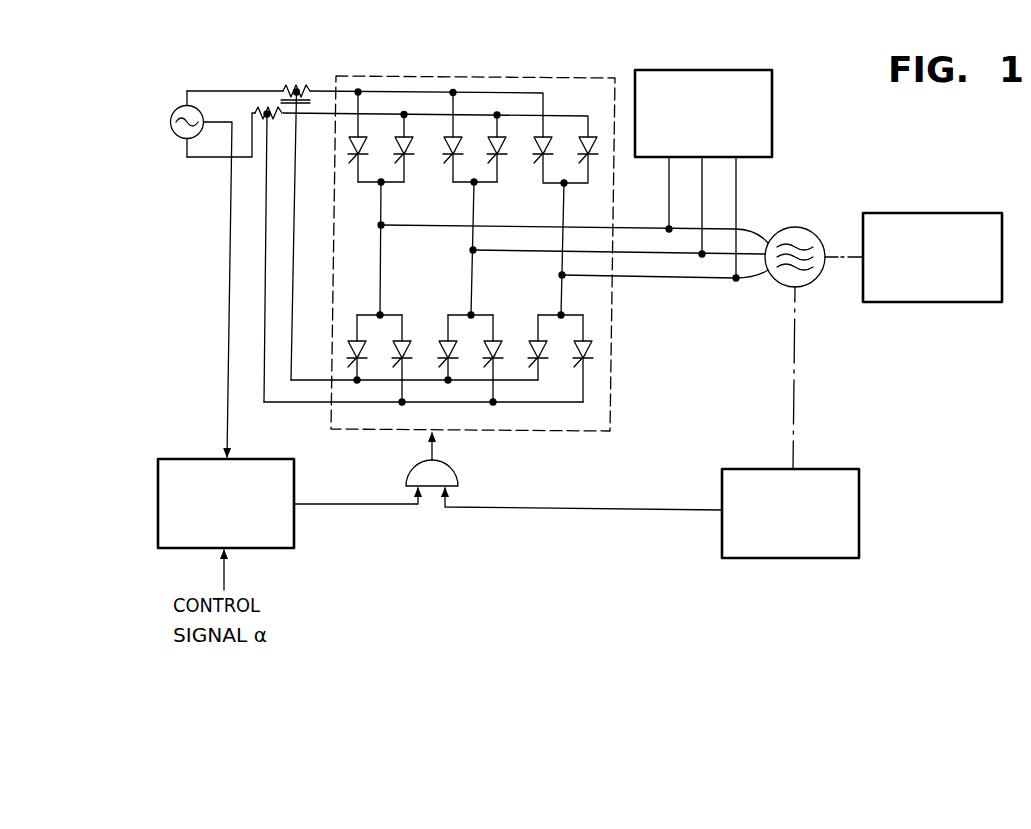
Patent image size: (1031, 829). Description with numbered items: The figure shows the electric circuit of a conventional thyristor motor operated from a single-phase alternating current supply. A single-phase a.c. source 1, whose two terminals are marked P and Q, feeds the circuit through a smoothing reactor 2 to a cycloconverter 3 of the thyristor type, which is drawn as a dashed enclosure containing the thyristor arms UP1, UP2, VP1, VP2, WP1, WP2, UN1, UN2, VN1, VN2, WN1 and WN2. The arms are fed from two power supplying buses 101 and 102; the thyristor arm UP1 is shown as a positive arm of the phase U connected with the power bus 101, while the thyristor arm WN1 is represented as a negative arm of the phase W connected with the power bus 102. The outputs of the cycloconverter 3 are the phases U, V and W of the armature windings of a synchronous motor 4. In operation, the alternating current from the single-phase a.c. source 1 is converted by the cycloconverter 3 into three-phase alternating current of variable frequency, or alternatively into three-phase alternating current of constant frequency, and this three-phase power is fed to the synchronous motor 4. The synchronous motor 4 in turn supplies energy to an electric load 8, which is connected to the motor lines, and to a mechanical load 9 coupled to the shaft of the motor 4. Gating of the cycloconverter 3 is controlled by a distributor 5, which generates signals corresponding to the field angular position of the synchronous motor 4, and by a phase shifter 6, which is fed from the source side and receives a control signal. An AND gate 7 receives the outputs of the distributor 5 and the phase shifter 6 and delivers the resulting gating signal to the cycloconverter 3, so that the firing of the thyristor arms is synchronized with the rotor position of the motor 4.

The single-phase a.c. source 1 is at (170, 122).
The smoothing reactor 2 is at (298, 87).
The cycloconverter 3 is at (378, 72).
The synchronous motor 4 is at (797, 227).
The distributor 5 is at (859, 512).
The phase shifter 6 is at (193, 459).
The AND gate 7 is at (462, 452).
The electric load 8 is at (772, 120).
The mechanical load 9 is at (930, 212).
The power supplying bus 101 is at (413, 92).
The power supplying bus 102 is at (565, 115).
The thyristor arm UP1 is at (350, 157).
The thyristor arm UP2 is at (412, 150).
The thyristor arm VP1 is at (452, 158).
The thyristor arm VP2 is at (505, 152).
The thyristor arm WP1 is at (539, 149).
The thyristor arm WP2 is at (594, 152).
The thyristor arm UN1 is at (405, 350).
The thyristor arm UN2 is at (352, 335).
The thyristor arm VN1 is at (496, 350).
The thyristor arm VN2 is at (439, 335).
The thyristor arm WN1 is at (588, 350).
The thyristor arm WN2 is at (531, 334).
The phase U is at (383, 227).
The phase V is at (475, 252).
The phase W is at (564, 277).
The P terminal of source P is at (187, 90).
The Q terminal of source Q is at (183, 159).